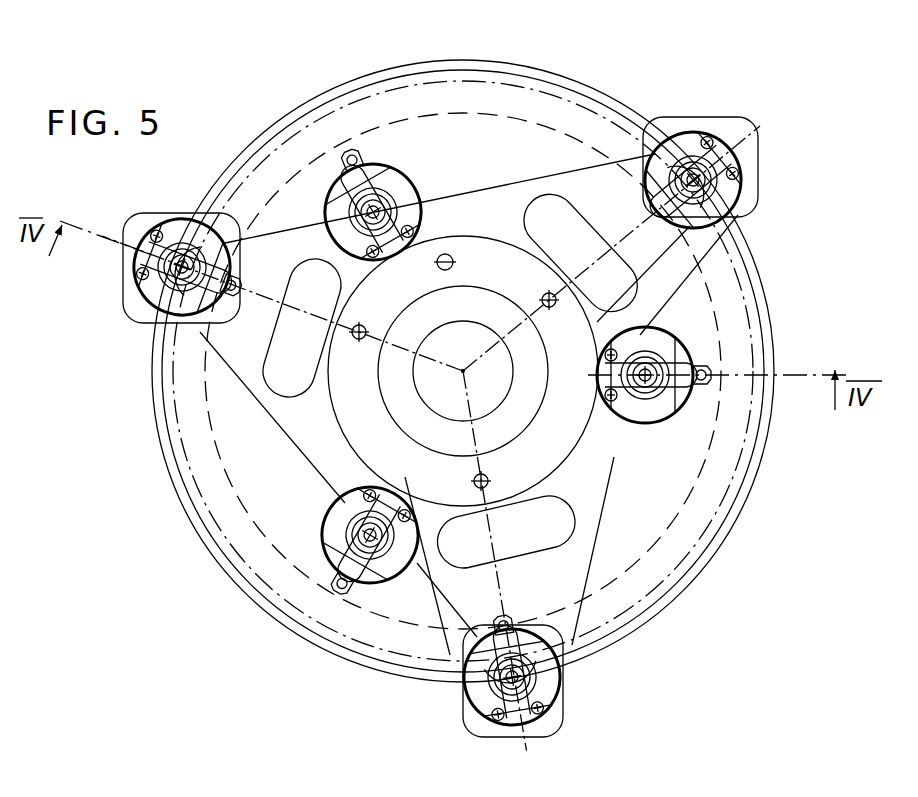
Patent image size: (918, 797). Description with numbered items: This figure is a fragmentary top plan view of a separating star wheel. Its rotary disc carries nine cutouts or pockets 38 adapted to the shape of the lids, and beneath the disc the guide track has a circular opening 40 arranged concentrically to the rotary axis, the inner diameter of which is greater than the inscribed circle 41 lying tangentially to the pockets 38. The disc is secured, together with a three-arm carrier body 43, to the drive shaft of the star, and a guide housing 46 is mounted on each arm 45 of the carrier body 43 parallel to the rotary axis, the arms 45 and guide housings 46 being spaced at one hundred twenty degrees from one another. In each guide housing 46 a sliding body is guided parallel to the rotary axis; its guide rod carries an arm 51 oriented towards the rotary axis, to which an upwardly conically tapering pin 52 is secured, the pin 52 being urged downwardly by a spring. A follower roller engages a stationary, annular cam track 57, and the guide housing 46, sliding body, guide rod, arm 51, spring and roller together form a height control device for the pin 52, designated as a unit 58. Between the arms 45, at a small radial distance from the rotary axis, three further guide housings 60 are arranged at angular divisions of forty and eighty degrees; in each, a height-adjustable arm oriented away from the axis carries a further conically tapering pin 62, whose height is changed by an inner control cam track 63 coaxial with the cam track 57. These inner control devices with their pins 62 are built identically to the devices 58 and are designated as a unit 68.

The pockets 38 is at (233, 219).
The circular opening 40 is at (205, 441).
The inscribed circle 41 is at (215, 408).
The three-arm carrier body 43 is at (702, 273).
The arms 45 is at (599, 149).
The guide housing 46 is at (143, 308).
The arm 51 is at (268, 337).
The pin 52 is at (325, 236).
The cam track 57 is at (205, 548).
The height control device unit 58 is at (130, 268).
The guide housings 60 is at (404, 176).
The pin 62 is at (352, 151).
The inner control cam track 63 is at (515, 540).
The inner control device unit 68 is at (383, 592).